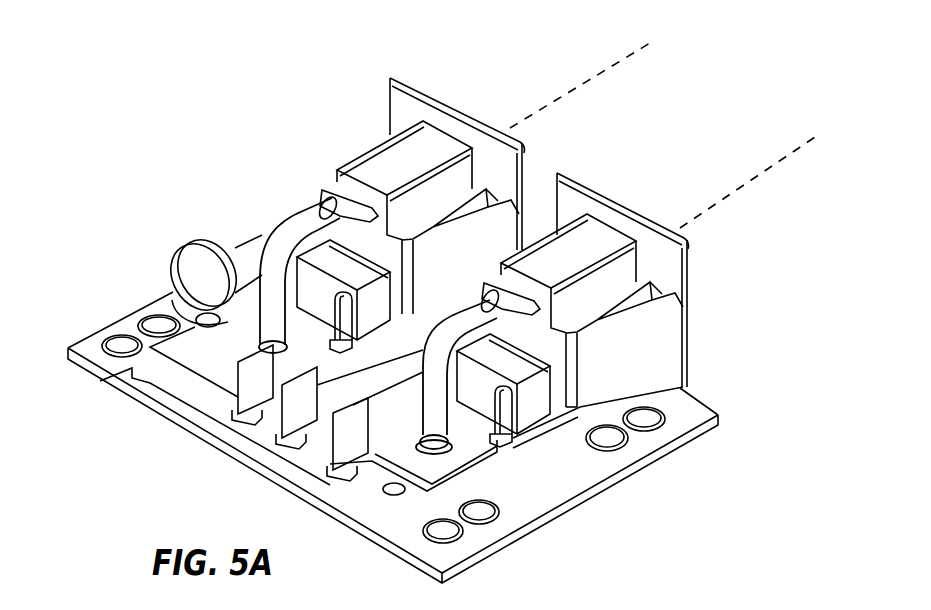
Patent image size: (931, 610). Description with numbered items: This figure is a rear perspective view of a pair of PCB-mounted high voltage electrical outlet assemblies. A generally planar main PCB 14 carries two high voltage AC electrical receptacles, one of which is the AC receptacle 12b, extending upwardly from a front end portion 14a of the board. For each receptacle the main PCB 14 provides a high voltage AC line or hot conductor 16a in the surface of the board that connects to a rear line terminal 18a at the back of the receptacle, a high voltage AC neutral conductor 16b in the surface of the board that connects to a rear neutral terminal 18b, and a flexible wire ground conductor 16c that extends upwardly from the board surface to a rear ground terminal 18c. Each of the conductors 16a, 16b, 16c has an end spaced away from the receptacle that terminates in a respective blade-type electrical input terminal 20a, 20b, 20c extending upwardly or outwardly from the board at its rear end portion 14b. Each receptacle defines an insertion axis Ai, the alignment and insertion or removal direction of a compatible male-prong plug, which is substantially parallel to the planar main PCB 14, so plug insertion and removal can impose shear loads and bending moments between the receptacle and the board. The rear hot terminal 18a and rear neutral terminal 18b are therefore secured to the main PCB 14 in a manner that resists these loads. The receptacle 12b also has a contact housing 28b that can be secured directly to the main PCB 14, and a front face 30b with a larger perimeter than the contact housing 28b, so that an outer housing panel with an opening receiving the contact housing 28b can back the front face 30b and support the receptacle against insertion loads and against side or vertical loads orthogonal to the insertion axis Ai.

The main PCB 14 is at (570, 482).
The front end portion 14a is at (710, 388).
The rear end portion 14b is at (125, 413).
The line conductor 16a is at (377, 502).
The neutral conductor 16b is at (96, 373).
The ground conductor 16c is at (283, 228).
The rear line terminal 18a is at (338, 310).
The rear neutral terminal 18b is at (297, 288).
The rear ground terminal 18c is at (350, 200).
The blade-type electrical input terminal 20a is at (355, 433).
The blade-type electrical input terminal 20b is at (303, 392).
The blade-type electrical input terminal 20c is at (240, 370).
The contact housing 28b is at (412, 140).
The front face 30b is at (400, 78).
The high voltage AC electrical receptacle 12b is at (437, 78).
The insertion axis Ai is at (607, 70).